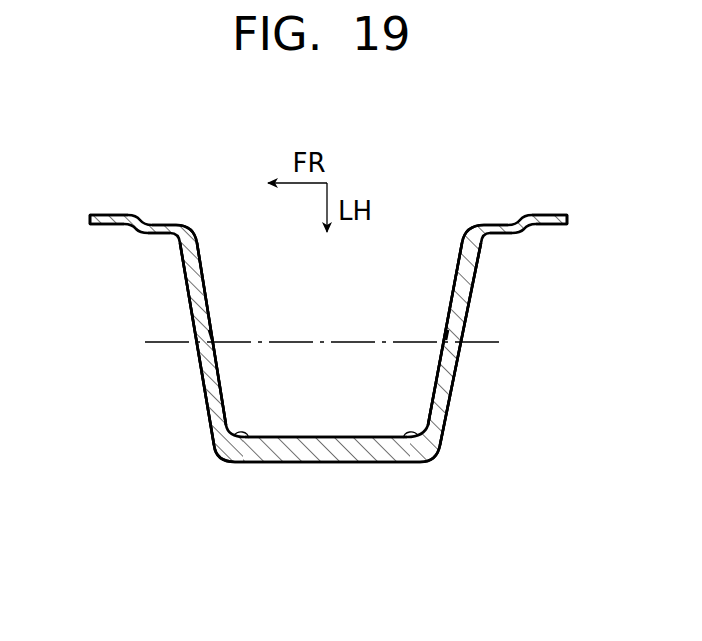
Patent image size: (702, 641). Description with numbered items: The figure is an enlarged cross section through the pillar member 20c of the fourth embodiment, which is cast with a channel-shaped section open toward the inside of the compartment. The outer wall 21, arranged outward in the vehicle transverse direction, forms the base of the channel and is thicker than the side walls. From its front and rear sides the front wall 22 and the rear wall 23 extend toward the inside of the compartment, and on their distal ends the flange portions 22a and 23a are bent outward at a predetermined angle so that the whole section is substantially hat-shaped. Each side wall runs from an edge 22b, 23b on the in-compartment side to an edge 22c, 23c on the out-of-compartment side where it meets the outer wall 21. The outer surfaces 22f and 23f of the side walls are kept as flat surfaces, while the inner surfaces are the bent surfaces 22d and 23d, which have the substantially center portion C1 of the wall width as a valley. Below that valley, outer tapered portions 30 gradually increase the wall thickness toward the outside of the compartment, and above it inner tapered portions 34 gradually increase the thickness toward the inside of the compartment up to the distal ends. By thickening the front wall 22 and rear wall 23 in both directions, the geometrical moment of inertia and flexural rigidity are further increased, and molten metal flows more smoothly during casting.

The pillar member 20c is at (183, 455).
The outer wall 21 is at (337, 463).
The front wall 22 is at (193, 320).
The flange portion 22a is at (116, 214).
The edge 22b is at (188, 224).
The edge 22c is at (242, 463).
The bent surface 22d is at (212, 333).
The outer surface 22f is at (201, 367).
The rear wall 23 is at (470, 317).
The flange portion 23a is at (537, 215).
The edge 23b is at (467, 230).
The edge 23c is at (415, 463).
The bent surface 23d is at (446, 335).
The outer surface 23f is at (457, 365).
The outer tapered portion 30 is at (218, 405).
The inner tapered portion 34 is at (200, 265).
The substantially center portion C1 is at (280, 342).